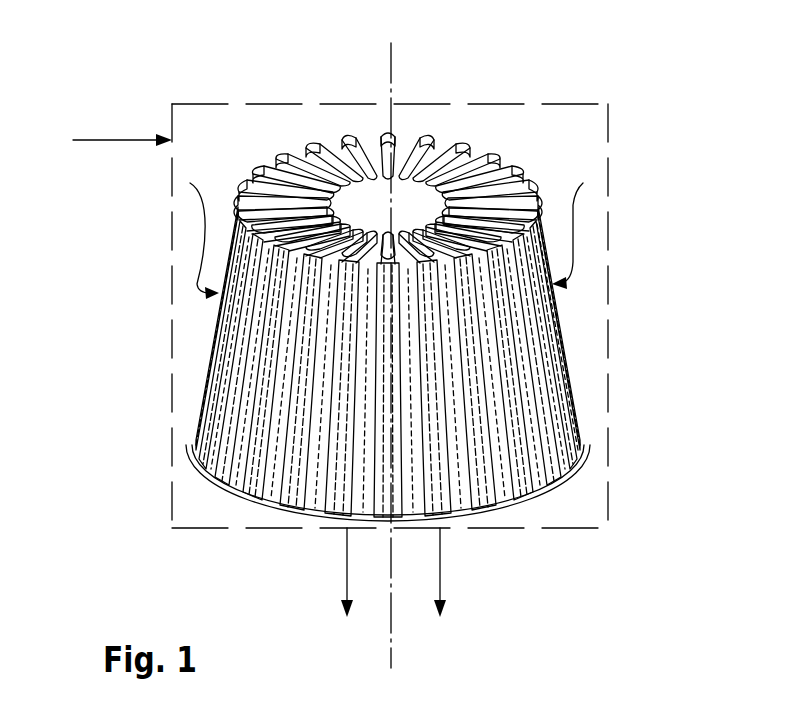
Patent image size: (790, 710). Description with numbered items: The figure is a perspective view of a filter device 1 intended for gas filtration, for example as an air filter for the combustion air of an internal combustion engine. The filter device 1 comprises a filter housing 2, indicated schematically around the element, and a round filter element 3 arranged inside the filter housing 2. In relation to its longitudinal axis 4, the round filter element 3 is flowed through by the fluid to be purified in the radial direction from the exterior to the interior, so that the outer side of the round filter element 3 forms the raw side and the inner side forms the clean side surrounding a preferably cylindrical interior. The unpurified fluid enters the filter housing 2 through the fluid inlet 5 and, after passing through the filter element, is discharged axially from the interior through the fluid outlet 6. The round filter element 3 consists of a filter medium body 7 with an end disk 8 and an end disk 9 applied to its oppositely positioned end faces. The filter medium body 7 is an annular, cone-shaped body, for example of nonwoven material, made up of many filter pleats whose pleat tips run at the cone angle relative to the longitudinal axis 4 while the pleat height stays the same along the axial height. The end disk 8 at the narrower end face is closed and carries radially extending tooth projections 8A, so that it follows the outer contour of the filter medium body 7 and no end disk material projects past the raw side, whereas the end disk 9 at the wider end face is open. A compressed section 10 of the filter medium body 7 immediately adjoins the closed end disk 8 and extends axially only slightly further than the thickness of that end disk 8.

The filter device 1 is at (634, 60).
The filter housing 2 is at (612, 146).
The round filter element 3 is at (582, 354).
The longitudinal axis 4 is at (394, 73).
The fluid inlet 5 is at (93, 138).
The fluid outlet 6 is at (441, 583).
The filter medium body 7 is at (220, 360).
The end disk 8 is at (420, 197).
The tooth projections 8A is at (327, 152).
The end disk 9 is at (236, 495).
The compressed section 10 is at (513, 240).